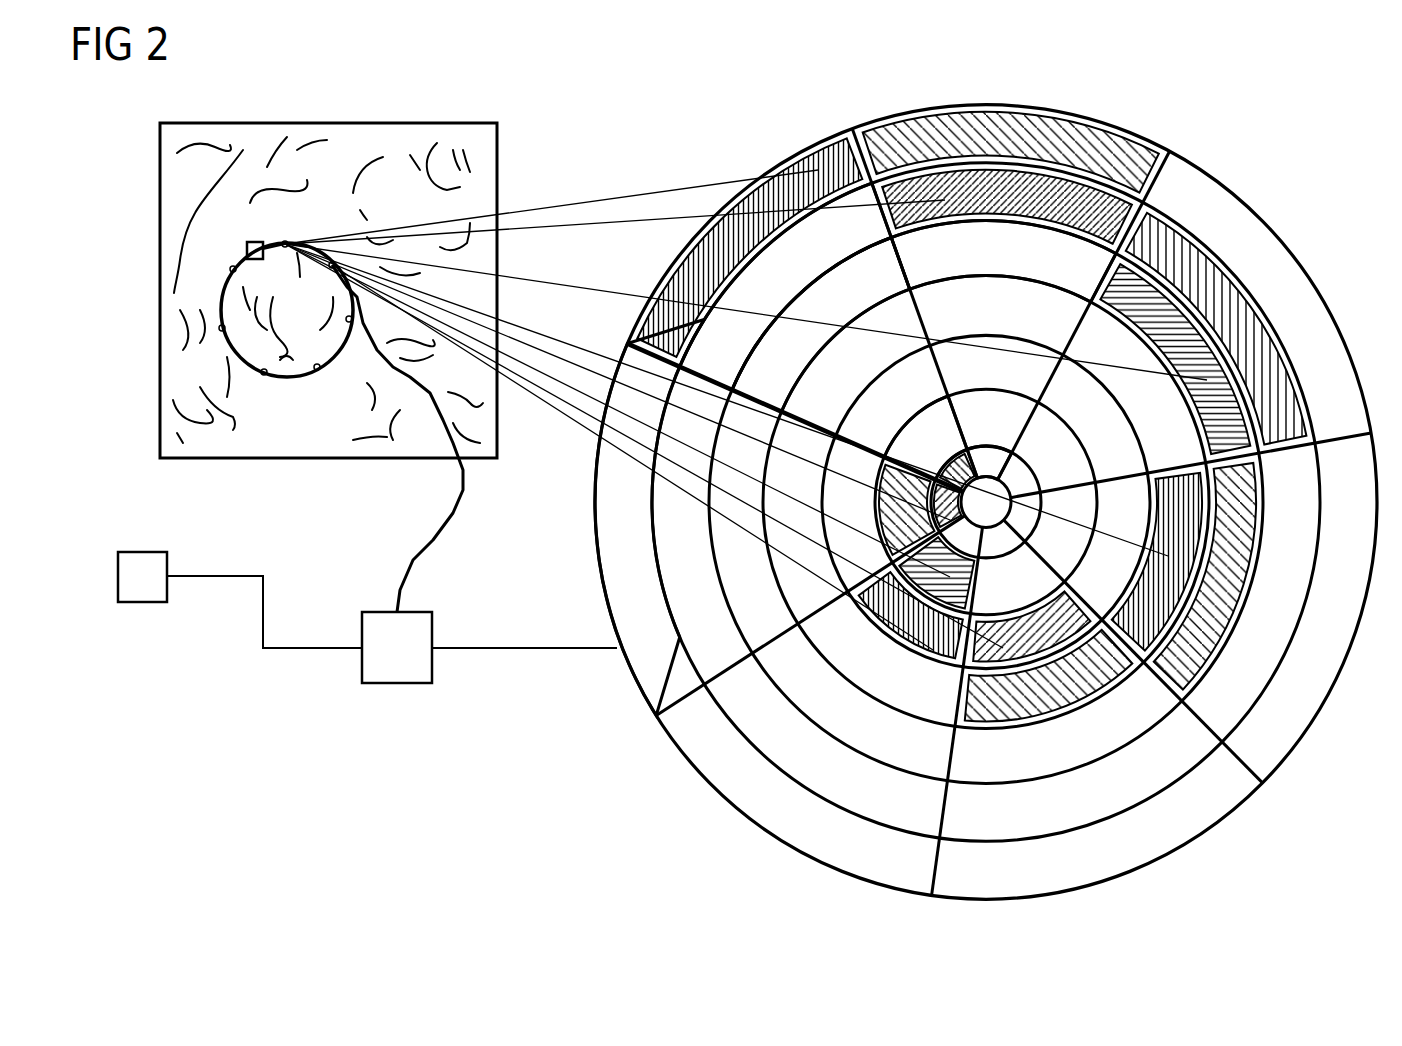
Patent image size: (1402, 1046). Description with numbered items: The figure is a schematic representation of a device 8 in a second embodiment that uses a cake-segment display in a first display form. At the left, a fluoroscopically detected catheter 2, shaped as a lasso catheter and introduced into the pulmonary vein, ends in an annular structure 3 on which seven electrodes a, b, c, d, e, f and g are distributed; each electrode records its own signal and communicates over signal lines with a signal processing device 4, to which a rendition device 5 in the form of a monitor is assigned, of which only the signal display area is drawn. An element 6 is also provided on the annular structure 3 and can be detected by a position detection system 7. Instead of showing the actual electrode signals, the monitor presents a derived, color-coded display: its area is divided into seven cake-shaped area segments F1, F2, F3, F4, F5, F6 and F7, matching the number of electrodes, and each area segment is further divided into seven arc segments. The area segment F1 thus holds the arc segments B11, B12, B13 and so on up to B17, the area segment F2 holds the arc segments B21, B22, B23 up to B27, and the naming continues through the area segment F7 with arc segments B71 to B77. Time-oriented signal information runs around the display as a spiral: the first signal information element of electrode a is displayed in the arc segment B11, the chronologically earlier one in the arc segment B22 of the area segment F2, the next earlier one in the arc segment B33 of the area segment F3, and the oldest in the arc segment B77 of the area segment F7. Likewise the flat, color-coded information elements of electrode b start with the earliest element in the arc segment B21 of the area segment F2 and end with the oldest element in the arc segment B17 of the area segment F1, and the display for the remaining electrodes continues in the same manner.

The catheter 2 is at (447, 447).
The annular structure 3 is at (293, 377).
The signal processing device 4 is at (395, 685).
The rendition device 5 is at (676, 760).
The element 6 is at (247, 250).
The position detection system 7 is at (145, 603).
The device 8 is at (966, 464).
The arc segment B11 is at (852, 143).
The arc segment B12 is at (780, 272).
The arc segment B13 is at (830, 307).
The arc segment B17 is at (922, 432).
The arc segment B21 is at (1163, 152).
The arc segment B22 is at (1133, 217).
The arc segment B23 is at (995, 267).
The arc segment B27 is at (987, 463).
The arc segment B33 is at (1247, 451).
The arc segment B71 is at (643, 677).
The arc segment B77 is at (935, 530).
The area segment F1 is at (795, 312).
The area segment F2 is at (922, 270).
The area segment F3 is at (1163, 315).
The area segment F4 is at (1198, 550).
The area segment F5 is at (1133, 708).
The area segment F6 is at (861, 711).
The area segment F7 is at (762, 612).
The electrode a is at (285, 242).
The electrode b is at (332, 263).
The electrode c is at (349, 321).
The electrode d is at (317, 369).
The electrode e is at (264, 374).
The electrode f is at (222, 330).
The electrode g is at (231, 269).